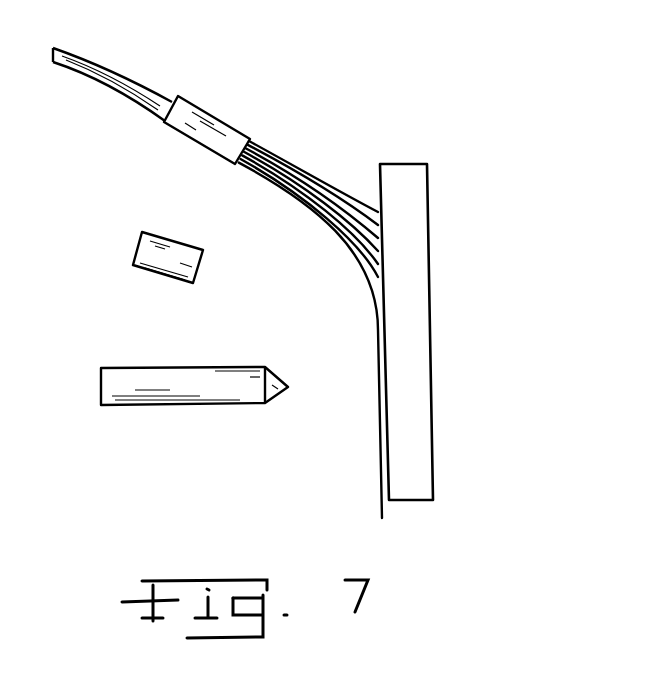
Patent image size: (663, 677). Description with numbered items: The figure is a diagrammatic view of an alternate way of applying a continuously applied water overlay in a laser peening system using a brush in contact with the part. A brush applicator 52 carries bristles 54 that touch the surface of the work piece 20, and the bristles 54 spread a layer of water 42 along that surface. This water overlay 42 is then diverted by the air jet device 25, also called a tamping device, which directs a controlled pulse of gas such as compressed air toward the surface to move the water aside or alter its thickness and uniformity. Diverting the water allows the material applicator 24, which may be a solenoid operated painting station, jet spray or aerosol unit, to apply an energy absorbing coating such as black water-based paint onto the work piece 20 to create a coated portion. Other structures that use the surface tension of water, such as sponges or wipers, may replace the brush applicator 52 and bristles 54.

The workpiece 20 is at (413, 257).
The material applicator 24 is at (153, 365).
The tamping device 25 is at (138, 244).
The layer of water 42 is at (380, 458).
The brush applicator 52 is at (215, 127).
The bristles 54 is at (302, 165).